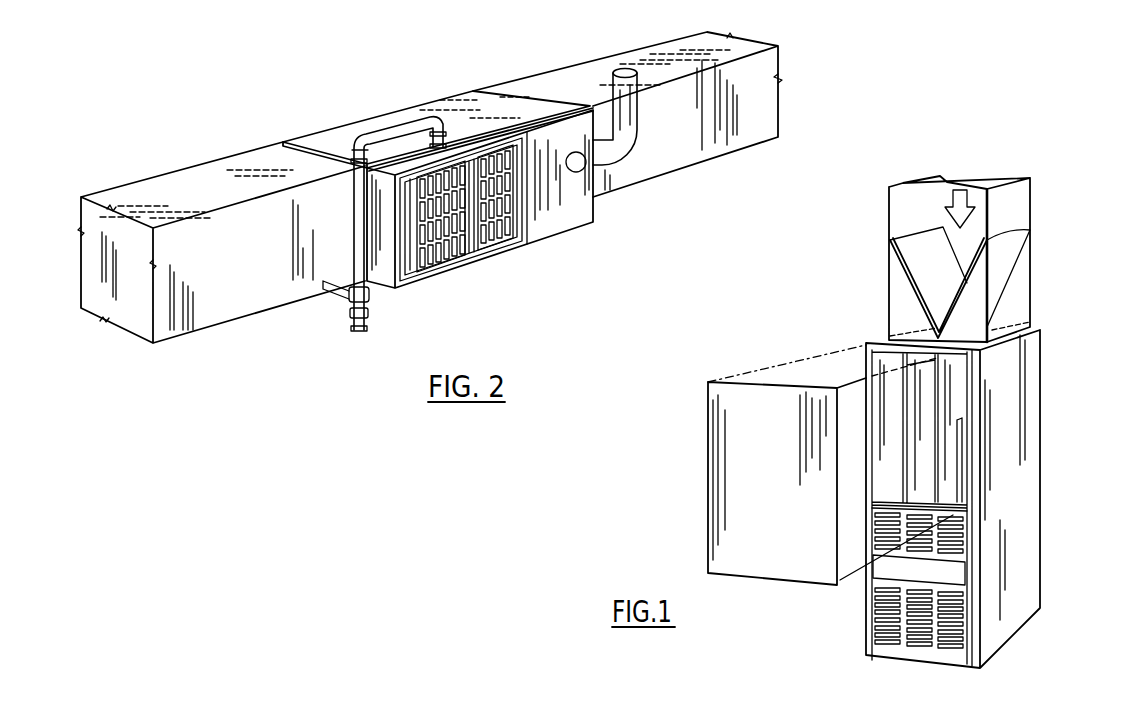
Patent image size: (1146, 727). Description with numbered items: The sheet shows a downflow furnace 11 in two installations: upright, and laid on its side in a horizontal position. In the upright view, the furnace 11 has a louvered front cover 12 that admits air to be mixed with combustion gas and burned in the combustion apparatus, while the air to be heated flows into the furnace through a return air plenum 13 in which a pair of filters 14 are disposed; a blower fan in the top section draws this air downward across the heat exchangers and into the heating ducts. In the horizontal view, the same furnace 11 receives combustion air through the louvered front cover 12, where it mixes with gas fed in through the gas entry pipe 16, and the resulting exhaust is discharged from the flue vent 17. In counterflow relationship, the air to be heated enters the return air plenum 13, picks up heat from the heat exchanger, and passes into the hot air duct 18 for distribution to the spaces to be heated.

In FIG. 2, the downflow furnace 11 is at (537, 230).
In FIG. 1, the downflow furnace 11 is at (1035, 475).
In FIG. 2, the louvered front cover 12 is at (430, 253).
In FIG. 1, the louvered front cover 12 is at (907, 643).
In FIG. 2, the return air plenum 13 is at (772, 96).
In FIG. 1, the return air plenum 13 is at (1025, 203).
In FIG. 1, the filters 14 is at (1000, 285).
In FIG. 2, the gas entry pipe 16 is at (386, 135).
In FIG. 2, the flue vent 17 is at (637, 108).
In FIG. 2, the hot air duct 18 is at (253, 297).